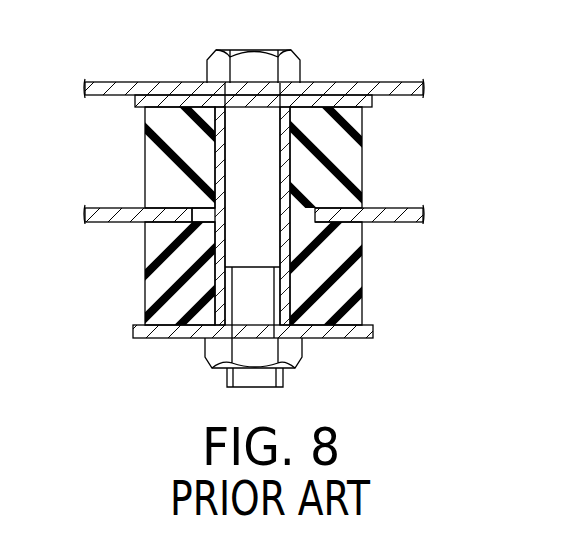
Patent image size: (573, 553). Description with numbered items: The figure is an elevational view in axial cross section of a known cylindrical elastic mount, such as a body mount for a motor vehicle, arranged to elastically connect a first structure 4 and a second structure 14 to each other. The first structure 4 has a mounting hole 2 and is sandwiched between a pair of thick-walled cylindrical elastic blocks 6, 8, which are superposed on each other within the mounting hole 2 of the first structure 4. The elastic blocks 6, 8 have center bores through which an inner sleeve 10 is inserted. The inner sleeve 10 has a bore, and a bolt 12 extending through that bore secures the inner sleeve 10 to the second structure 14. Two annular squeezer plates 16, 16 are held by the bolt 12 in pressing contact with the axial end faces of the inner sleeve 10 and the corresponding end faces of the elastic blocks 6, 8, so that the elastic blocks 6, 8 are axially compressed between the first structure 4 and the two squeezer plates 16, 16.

The mounting hole 2 is at (199, 209).
The first structure 4 is at (388, 212).
The cylindrical elastic block 6 is at (347, 152).
The cylindrical elastic block 8 is at (348, 285).
The inner sleeve 10 is at (222, 152).
The bolt 12 is at (268, 147).
The second structure 14 is at (122, 88).
The annular squeezer plate 16 is at (166, 100).